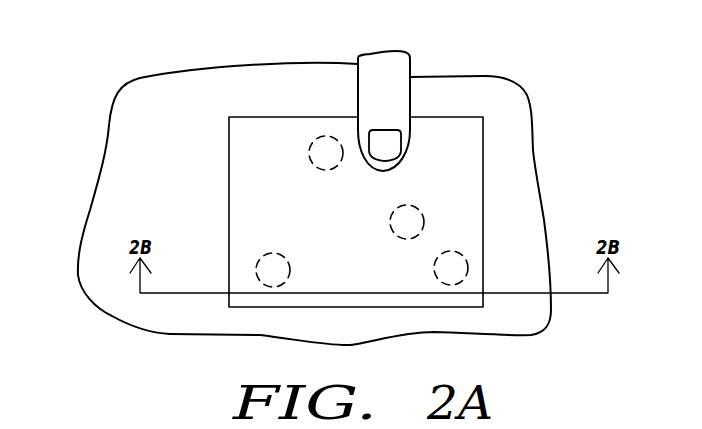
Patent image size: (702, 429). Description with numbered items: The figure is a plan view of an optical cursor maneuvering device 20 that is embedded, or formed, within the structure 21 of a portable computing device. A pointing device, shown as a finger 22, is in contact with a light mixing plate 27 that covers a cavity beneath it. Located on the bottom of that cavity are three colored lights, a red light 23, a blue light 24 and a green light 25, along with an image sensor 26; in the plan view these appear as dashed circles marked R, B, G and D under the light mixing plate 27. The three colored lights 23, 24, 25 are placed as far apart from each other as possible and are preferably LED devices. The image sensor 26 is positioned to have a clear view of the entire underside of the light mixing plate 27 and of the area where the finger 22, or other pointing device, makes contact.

The optical cursor maneuvering device 20 is at (483, 158).
The structure of a portable computing device 21 is at (107, 154).
The finger 22 is at (411, 79).
The red light 23 is at (314, 139).
The blue light 24 is at (256, 268).
The green light 25 is at (468, 268).
The image sensor 26 is at (425, 218).
The light mixing plate 27 is at (229, 144).